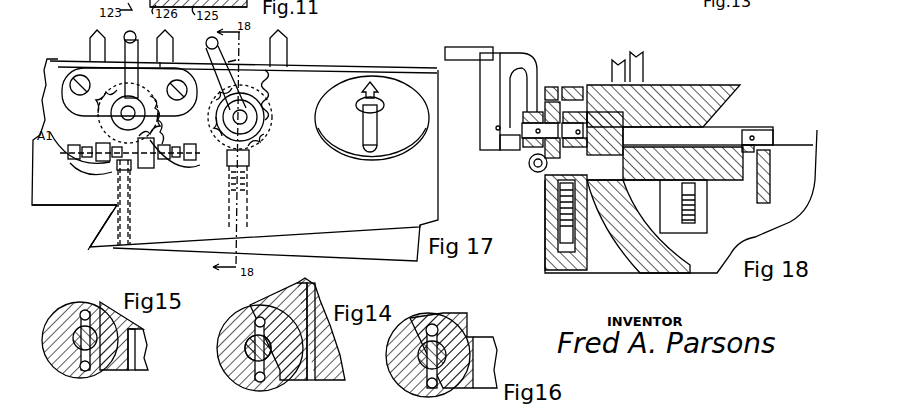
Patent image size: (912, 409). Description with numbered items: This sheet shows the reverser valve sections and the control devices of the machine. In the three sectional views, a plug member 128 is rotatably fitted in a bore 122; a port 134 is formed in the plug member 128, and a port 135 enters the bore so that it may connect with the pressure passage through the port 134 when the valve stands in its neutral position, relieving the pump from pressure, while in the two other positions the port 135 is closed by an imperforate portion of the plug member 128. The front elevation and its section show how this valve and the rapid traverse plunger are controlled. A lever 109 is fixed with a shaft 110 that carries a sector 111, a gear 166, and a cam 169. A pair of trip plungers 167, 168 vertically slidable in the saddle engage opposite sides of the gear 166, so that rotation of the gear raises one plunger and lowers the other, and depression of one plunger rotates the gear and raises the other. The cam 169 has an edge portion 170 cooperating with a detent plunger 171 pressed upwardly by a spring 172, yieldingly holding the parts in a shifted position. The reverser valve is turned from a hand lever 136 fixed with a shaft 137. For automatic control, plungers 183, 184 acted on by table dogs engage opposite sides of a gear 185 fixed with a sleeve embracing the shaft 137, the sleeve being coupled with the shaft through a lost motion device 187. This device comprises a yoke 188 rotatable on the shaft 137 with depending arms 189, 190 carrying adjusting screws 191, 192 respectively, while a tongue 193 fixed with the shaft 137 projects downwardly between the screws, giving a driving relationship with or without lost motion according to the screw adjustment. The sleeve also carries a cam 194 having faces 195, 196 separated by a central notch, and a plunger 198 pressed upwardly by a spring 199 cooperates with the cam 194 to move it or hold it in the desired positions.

In FIG. 17, the plunger 183 is at (88, 40).
In FIG. 17, the hand lever 136 is at (124, 42).
In FIG. 18, the hand lever 136 is at (478, 46).
In FIG. 17, the gear 185 is at (157, 47).
In FIG. 17, the plunger 184 is at (172, 47).
In FIG. 18, the plunger 184 is at (645, 60).
In FIG. 17, the trip plunger 167 is at (208, 44).
In FIG. 18, the trip plunger 167 is at (621, 58).
In FIG. 17, the lever 109 is at (236, 60).
In FIG. 18, the lever 109 is at (509, 56).
In FIG. 17, the trip plunger 168 is at (287, 47).
In FIG. 17, the yoke 188 is at (129, 92).
In FIG. 17, the shaft 137 is at (100, 115).
In FIG. 17, the adjusting screw 191 is at (163, 118).
In FIG. 17, the face 195 is at (66, 150).
In FIG. 17, the depending arm 189 is at (103, 167).
In FIG. 17, the lost motion device 187 is at (100, 180).
In FIG. 17, the tongue 193 is at (117, 177).
In FIG. 17, the plunger 198 is at (107, 207).
In FIG. 17, the spring 199 is at (112, 212).
In FIG. 17, the face 196 is at (140, 207).
In FIG. 17, the cam 194 is at (157, 177).
In FIG. 17, the depending arm 190 is at (178, 172).
In FIG. 17, the adjusting screw 192 is at (190, 160).
In FIG. 17, the shaft 110 is at (270, 128).
In FIG. 18, the shaft 110 is at (720, 104).
In FIG. 17, the cam 169 is at (263, 150).
In FIG. 18, the cam 169 is at (577, 85).
In FIG. 17, the edge portion 170 is at (260, 162).
In FIG. 17, the detent plunger 171 is at (250, 170).
In FIG. 18, the detent plunger 171 is at (530, 170).
In FIG. 17, the spring 172 is at (250, 193).
In FIG. 18, the spring 172 is at (558, 205).
In FIG. 18, the gear 166 is at (605, 85).
In FIG. 18, the sector 111 is at (772, 166).
In FIG. 15, the port 135 is at (97, 303).
In FIG. 14, the port 135 is at (262, 318).
In FIG. 16, the port 135 is at (432, 322).
In FIG. 15, the plug member 128 is at (143, 329).
In FIG. 14, the plug member 128 is at (270, 352).
In FIG. 16, the plug member 128 is at (460, 333).
In FIG. 15, the port 134 is at (63, 368).
In FIG. 14, the port 134 is at (245, 358).
In FIG. 16, the port 134 is at (403, 367).
In FIG. 14, the bore 122 is at (240, 343).